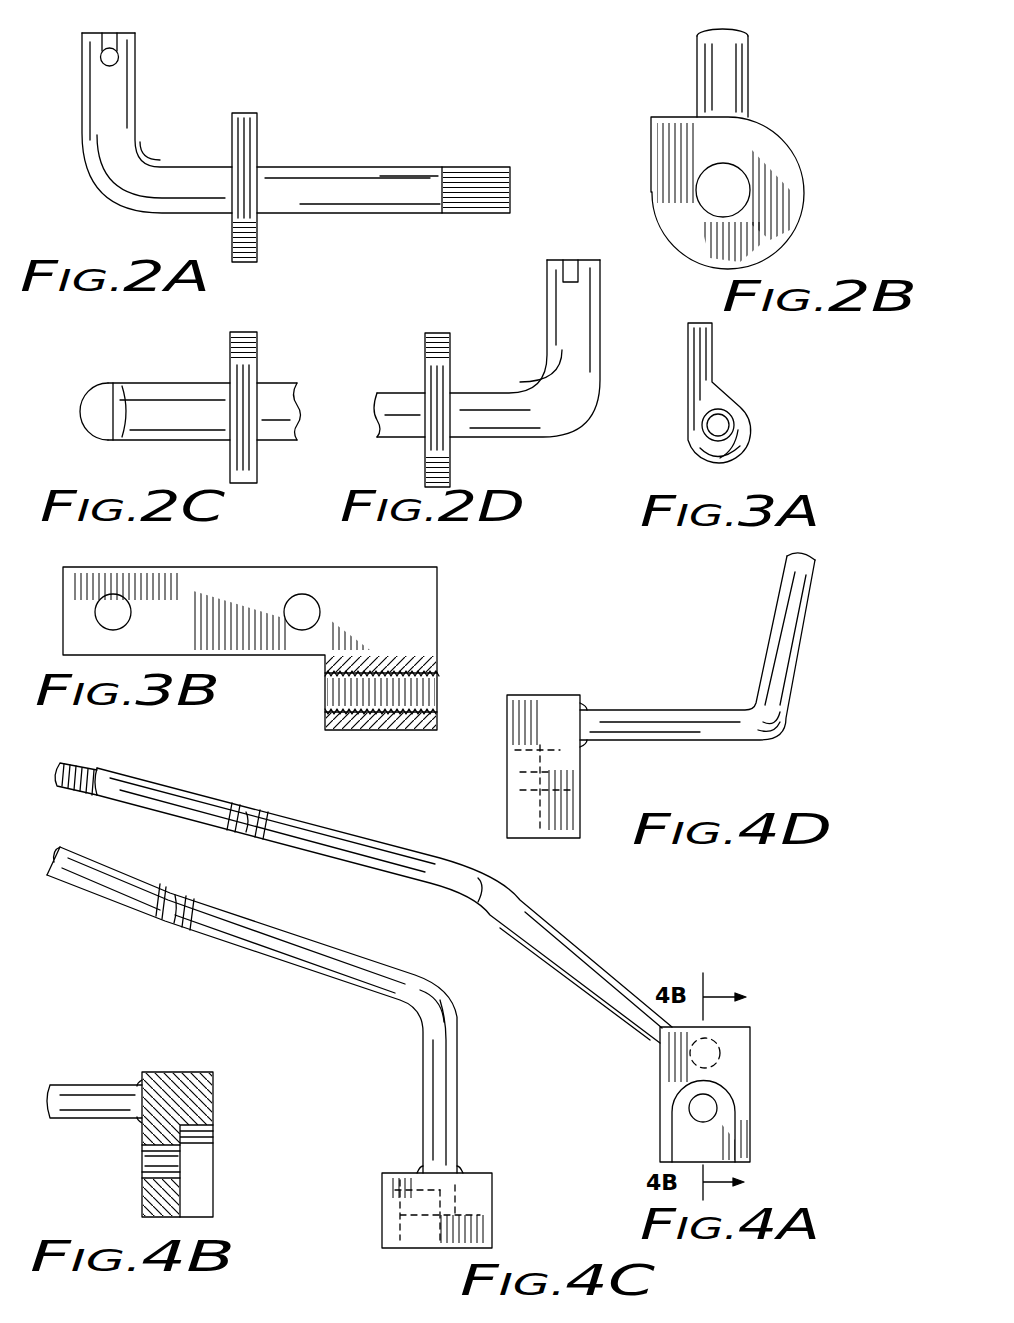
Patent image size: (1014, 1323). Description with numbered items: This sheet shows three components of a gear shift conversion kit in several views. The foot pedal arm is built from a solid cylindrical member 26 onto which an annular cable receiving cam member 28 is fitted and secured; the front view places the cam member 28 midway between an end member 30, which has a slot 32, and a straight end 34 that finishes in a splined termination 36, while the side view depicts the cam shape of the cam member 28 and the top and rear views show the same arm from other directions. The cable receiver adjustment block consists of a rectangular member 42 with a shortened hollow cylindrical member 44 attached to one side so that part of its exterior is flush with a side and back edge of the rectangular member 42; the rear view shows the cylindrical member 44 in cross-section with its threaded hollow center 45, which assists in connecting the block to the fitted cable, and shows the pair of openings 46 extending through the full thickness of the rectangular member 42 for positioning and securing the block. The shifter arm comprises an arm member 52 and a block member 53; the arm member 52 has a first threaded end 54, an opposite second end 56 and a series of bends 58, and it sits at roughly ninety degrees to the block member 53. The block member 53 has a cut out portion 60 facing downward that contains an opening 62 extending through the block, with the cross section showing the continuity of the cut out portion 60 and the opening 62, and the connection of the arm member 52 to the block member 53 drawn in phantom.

In FIG. 2A, the solid cylindrical member 26 is at (316, 213).
In FIG. 2B, the solid cylindrical member 26 is at (748, 60).
In FIG. 2C, the solid cylindrical member 26 is at (275, 442).
In FIG. 2D, the solid cylindrical member 26 is at (395, 440).
In FIG. 2A, the annular cable receiving cam member 28 is at (252, 130).
In FIG. 2B, the annular cable receiving cam member 28 is at (786, 164).
In FIG. 2C, the annular cable receiving cam member 28 is at (256, 362).
In FIG. 2D, the annular cable receiving cam member 28 is at (450, 372).
In FIG. 2A, the end member 30 is at (102, 168).
In FIG. 2C, the end member 30 is at (188, 396).
In FIG. 2D, the end member 30 is at (590, 348).
In FIG. 2A, the slot 32 is at (113, 44).
In FIG. 2D, the slot 32 is at (562, 268).
In FIG. 2A, the straight end 34 is at (420, 172).
In FIG. 2B, the straight end 34 is at (715, 170).
In FIG. 2A, the splined termination 36 is at (471, 168).
In FIG. 3A, the rectangular member 42 is at (712, 362).
In FIG. 3B, the rectangular member 42 is at (262, 582).
In FIG. 3A, the shortened hollow cylindrical member 44 is at (697, 440).
In FIG. 3B, the shortened hollow cylindrical member 44 is at (330, 716).
In FIG. 3A, the hollow center 45 is at (735, 430).
In FIG. 3B, the hollow center 45 is at (432, 690).
In FIG. 3B, the pair of openings 46 is at (128, 612).
In FIG. 4D, the arm member 52 is at (683, 724).
In FIG. 4A, the arm member 52 is at (583, 963).
In FIG. 4C, the arm member 52 is at (452, 1092).
In FIG. 4B, the arm member 52 is at (62, 1085).
In FIG. 4D, the block member 53 is at (560, 712).
In FIG. 4A, the block member 53 is at (740, 1066).
In FIG. 4C, the block member 53 is at (495, 1198).
In FIG. 4B, the block member 53 is at (216, 1090).
In FIG. 4A, the first threaded end 54 is at (100, 768).
In FIG. 4D, the second end 56 is at (588, 706).
In FIG. 4C, the second end 56 is at (462, 1170).
In FIG. 4B, the second end 56 is at (139, 1082).
In FIG. 4D, the series of bends 58 is at (778, 714).
In FIG. 4A, the series of bends 58 is at (238, 818).
In FIG. 4C, the series of bends 58 is at (163, 920).
In FIG. 4D, the cut out portion 60 is at (510, 784).
In FIG. 4A, the cut out portion 60 is at (738, 1141).
In FIG. 4C, the cut out portion 60 is at (426, 1242).
In FIG. 4B, the cut out portion 60 is at (198, 1184).
In FIG. 4D, the opening 62 is at (585, 788).
In FIG. 4A, the opening 62 is at (718, 1105).
In FIG. 4C, the opening 62 is at (398, 1192).
In FIG. 4B, the opening 62 is at (147, 1168).